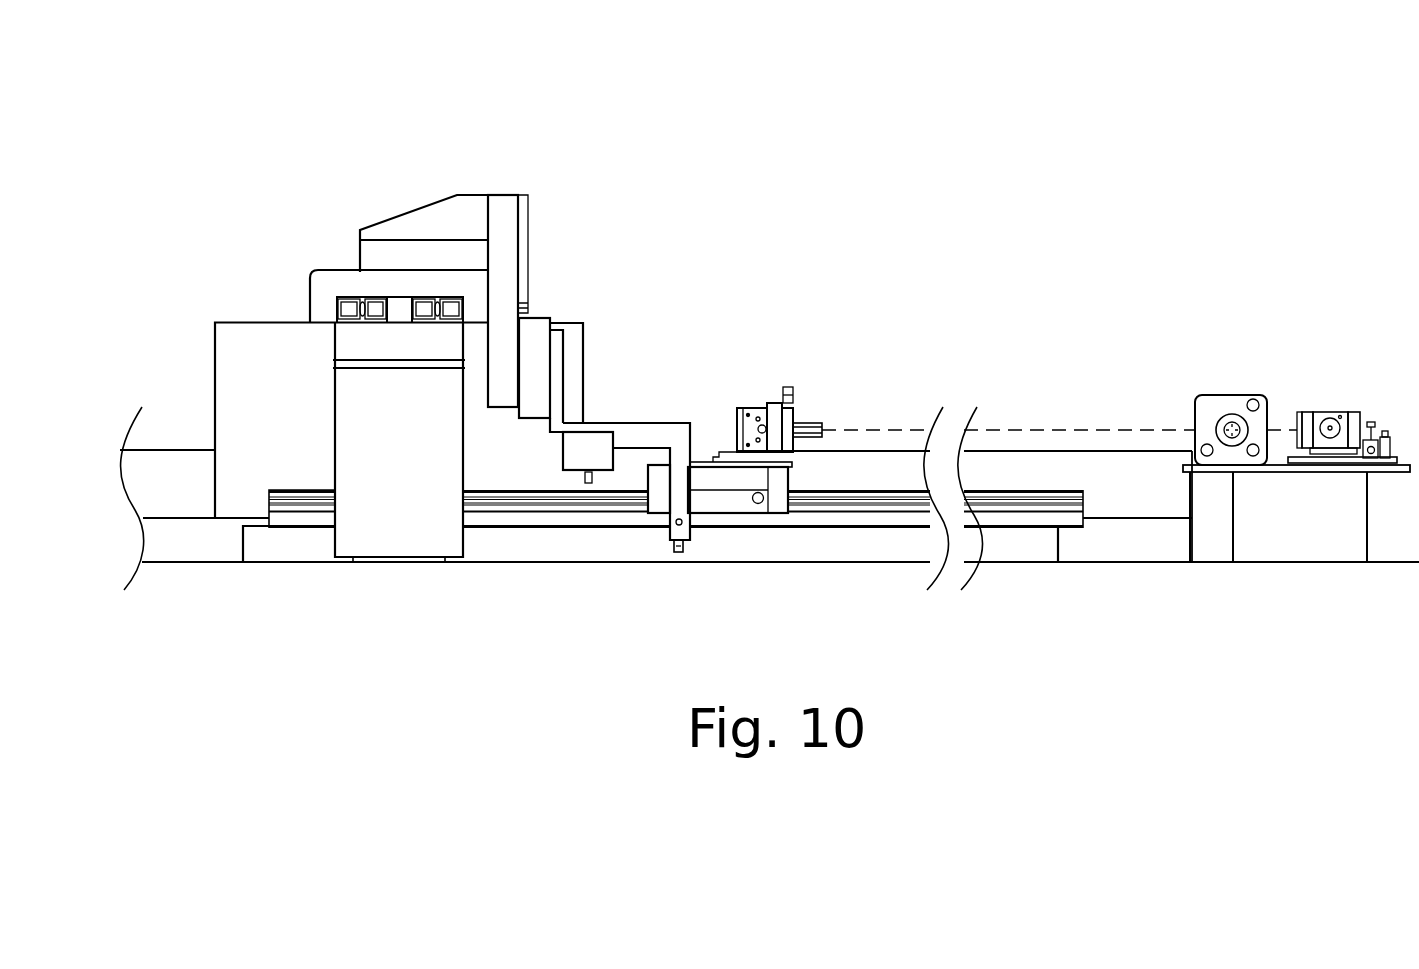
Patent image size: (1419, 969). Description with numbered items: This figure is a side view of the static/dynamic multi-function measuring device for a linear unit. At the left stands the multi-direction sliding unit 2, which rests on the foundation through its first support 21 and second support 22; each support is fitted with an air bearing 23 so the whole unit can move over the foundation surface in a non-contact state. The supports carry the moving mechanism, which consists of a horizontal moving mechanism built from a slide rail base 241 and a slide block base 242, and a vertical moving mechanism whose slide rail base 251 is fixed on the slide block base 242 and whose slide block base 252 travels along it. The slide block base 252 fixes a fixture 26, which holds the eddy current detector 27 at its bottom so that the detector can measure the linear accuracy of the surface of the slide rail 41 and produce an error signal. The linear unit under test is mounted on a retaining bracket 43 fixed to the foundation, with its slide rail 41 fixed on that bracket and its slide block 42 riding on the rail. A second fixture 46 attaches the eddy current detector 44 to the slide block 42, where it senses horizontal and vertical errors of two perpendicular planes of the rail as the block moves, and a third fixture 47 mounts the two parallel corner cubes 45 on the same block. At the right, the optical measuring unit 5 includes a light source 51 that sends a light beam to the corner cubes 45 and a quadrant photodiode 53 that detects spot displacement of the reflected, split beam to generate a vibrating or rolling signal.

The multi-direction sliding unit 2 is at (430, 183).
The first support 21 is at (233, 380).
The second support 22 is at (354, 434).
The air bearing 23 is at (403, 562).
The slide rail base 241 is at (363, 352).
The slide block base 242 is at (353, 282).
The slide rail base 251 is at (503, 207).
The slide block base 252 is at (537, 333).
The fixture 26 is at (644, 428).
The eddy current detector 27 is at (585, 472).
The slide rail 41 is at (292, 516).
The slide block 42 is at (760, 505).
The retaining bracket 43 is at (316, 548).
The eddy current detector 44 is at (677, 520).
The corner cube 45 is at (808, 427).
The second fixture 46 is at (645, 498).
The third fixture 47 is at (749, 416).
The optical measuring unit 5 is at (1277, 327).
The light source 51 is at (1327, 417).
The quadrant photodiode 53 is at (1224, 403).